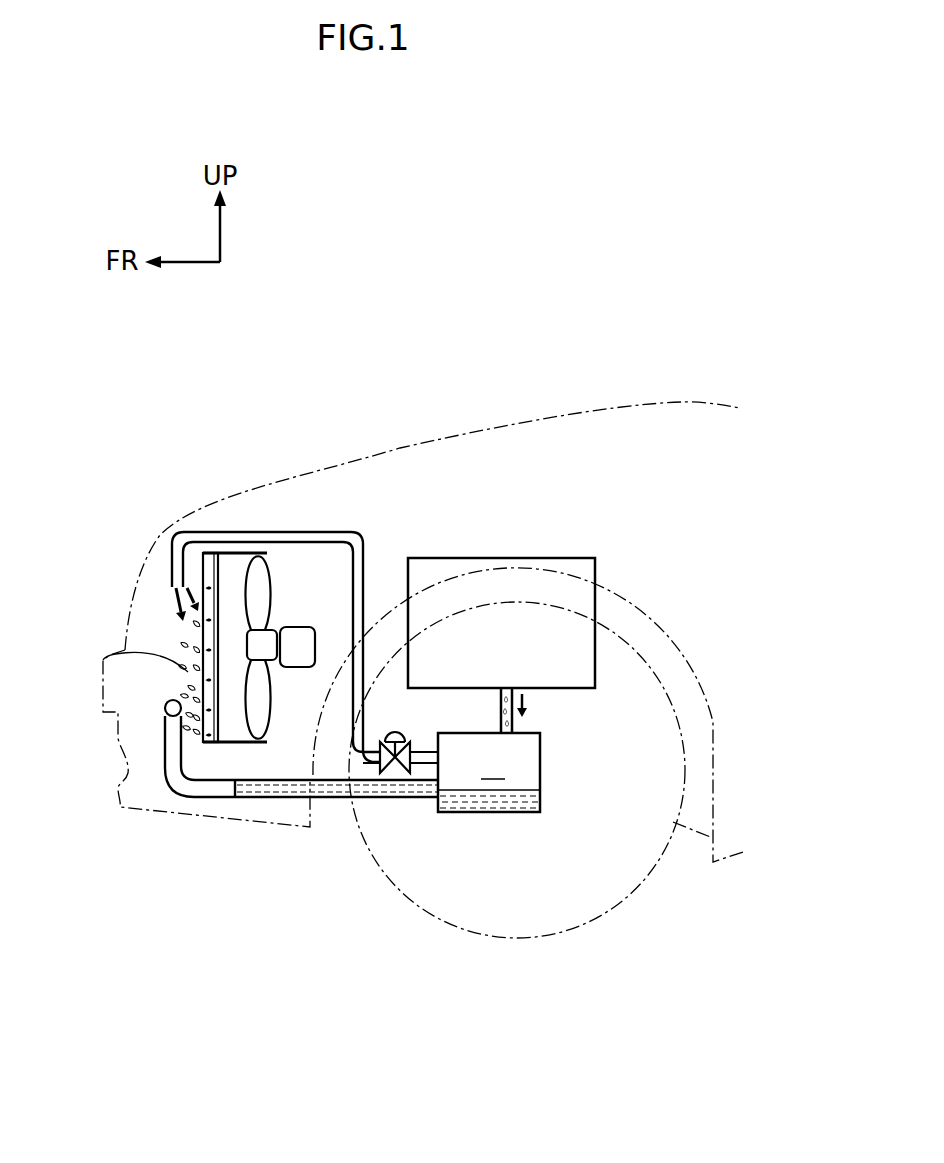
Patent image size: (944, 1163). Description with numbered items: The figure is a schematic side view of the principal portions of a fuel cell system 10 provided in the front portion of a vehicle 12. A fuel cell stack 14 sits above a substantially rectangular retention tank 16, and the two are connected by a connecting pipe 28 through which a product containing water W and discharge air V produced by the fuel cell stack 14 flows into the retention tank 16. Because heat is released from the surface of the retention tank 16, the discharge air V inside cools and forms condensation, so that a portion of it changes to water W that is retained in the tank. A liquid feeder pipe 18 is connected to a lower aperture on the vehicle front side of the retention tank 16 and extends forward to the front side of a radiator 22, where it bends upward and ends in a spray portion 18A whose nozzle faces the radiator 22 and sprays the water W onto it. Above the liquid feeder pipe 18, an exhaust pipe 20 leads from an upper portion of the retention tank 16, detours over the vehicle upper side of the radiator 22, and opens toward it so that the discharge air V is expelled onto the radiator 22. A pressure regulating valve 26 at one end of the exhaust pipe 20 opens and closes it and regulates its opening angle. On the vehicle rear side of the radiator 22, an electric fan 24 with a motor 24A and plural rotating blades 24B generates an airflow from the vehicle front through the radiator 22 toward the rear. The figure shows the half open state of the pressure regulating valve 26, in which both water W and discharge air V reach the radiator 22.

The fuel cell system 10 is at (387, 510).
The vehicle 12 is at (338, 325).
The fuel cell stack 14 is at (507, 558).
The retention tank 16 is at (493, 813).
The liquid feeder pipe 18 is at (281, 801).
The spray portion 18A is at (164, 709).
The exhaust pipe 20 is at (292, 533).
The radiator 22 is at (238, 551).
The electric fan 24 is at (282, 591).
The motor 24A is at (289, 668).
The rotating blades 24B is at (250, 715).
The pressure regulating valve 26 is at (411, 752).
The connecting pipe 28 is at (521, 731).
The discharge air V is at (172, 607).
The water W is at (186, 645).